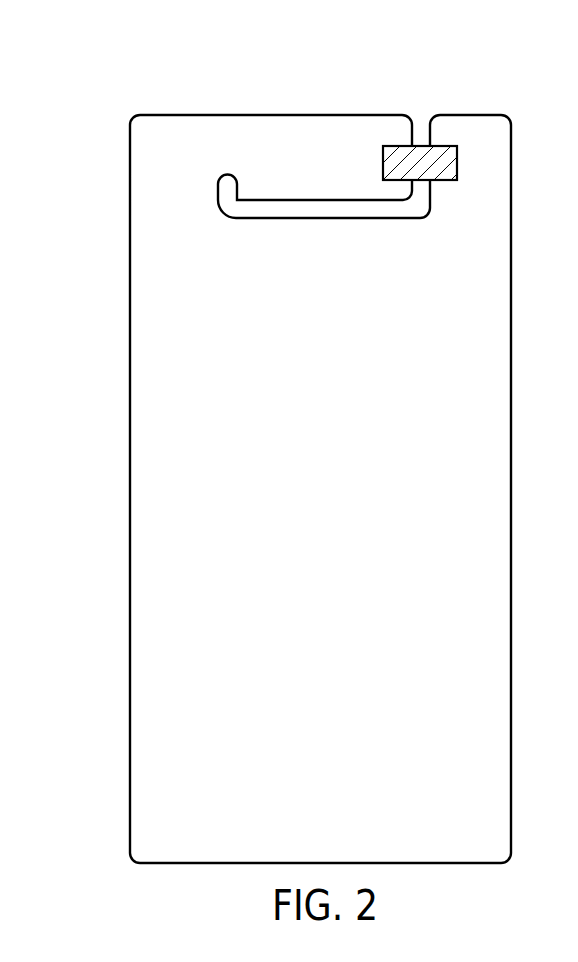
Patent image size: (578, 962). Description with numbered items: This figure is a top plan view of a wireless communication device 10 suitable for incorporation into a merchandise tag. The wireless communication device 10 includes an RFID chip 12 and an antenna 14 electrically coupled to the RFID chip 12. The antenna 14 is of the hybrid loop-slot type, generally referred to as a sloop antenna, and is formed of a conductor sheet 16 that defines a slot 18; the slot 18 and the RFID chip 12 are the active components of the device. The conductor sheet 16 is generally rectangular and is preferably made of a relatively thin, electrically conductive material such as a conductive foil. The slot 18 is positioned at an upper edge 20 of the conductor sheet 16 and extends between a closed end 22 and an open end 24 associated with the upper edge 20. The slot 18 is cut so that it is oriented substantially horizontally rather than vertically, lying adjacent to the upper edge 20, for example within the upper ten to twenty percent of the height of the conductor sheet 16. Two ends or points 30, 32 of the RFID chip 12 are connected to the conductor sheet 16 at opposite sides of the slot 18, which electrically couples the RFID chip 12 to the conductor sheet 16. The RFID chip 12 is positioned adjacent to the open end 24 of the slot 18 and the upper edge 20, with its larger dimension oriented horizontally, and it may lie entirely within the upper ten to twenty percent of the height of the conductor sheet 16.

The wireless communication device 10 is at (126, 873).
The RFID chip 12 is at (421, 186).
The antenna 14 is at (130, 112).
The conductor sheet 16 is at (465, 460).
The slot 18 is at (314, 219).
The upper edge 20 is at (250, 114).
The closed end 22 is at (227, 174).
The open end 24 is at (425, 111).
The end of the RFID chip 30 is at (383, 160).
The end of the RFID chip 32 is at (458, 160).